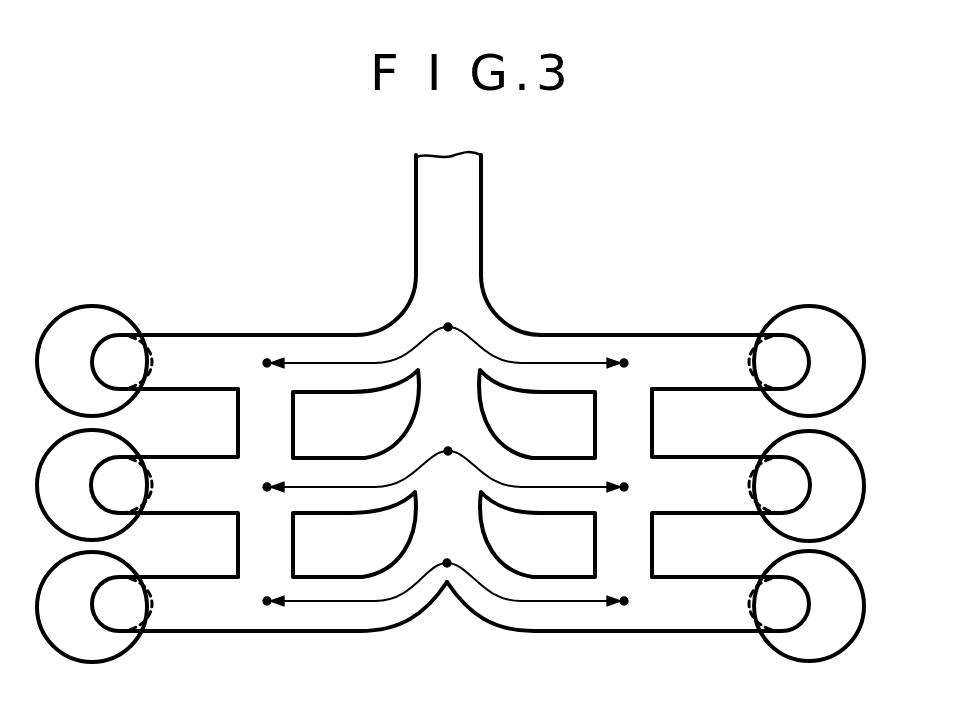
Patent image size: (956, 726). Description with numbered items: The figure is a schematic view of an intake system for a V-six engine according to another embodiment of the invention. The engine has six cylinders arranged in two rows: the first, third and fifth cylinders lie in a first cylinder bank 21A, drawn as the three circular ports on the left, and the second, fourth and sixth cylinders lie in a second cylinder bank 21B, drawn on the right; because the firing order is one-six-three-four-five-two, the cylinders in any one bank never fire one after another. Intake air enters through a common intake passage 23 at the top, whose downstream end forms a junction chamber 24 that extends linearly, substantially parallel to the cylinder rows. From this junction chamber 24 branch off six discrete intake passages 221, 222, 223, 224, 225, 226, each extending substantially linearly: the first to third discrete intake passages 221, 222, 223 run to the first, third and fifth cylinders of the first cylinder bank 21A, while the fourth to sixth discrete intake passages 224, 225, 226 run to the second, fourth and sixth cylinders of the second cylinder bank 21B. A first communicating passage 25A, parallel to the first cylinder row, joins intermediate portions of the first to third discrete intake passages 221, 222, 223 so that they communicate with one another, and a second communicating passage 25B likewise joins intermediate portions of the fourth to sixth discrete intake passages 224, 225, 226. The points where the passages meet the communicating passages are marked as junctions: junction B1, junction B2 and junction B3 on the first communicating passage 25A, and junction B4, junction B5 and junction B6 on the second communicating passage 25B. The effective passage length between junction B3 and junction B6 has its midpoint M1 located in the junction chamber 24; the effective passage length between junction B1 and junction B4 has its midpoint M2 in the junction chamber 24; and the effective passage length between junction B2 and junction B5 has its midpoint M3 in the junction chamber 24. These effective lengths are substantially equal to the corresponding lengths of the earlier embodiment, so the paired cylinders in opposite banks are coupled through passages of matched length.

The common intake passage 23 is at (492, 224).
The first cylinder bank 21A is at (126, 300).
The second cylinder bank 21B is at (803, 297).
The first discrete intake passage 221 is at (192, 622).
The second discrete intake passage 222 is at (188, 500).
The third discrete intake passage 223 is at (215, 347).
The fourth discrete intake passage 224 is at (705, 612).
The fifth discrete intake passage 225 is at (712, 500).
The sixth discrete intake passage 226 is at (703, 347).
The first communicating passage 25A is at (253, 432).
The second communicating passage 25B is at (640, 433).
The junction chamber 24 is at (462, 418).
The midpoint of effective passage length L1" M1 is at (448, 326).
The midpoint of effective passage length L2" M2 is at (447, 567).
The midpoint of effective passage length Lo" M3 is at (446, 451).
The junction of first discrete intake passage to first communicating passage B1 is at (267, 604).
The junction of second discrete intake passage to first communicating passage B2 is at (267, 490).
The junction of third discrete intake passage to first communicating passage B3 is at (267, 366).
The junction of fourth discrete intake passage to second communicating passage B4 is at (623, 605).
The junction of fifth discrete intake passage to second communicating passage B5 is at (624, 491).
The junction of sixth discrete intake passage to second communicating passage B6 is at (624, 367).